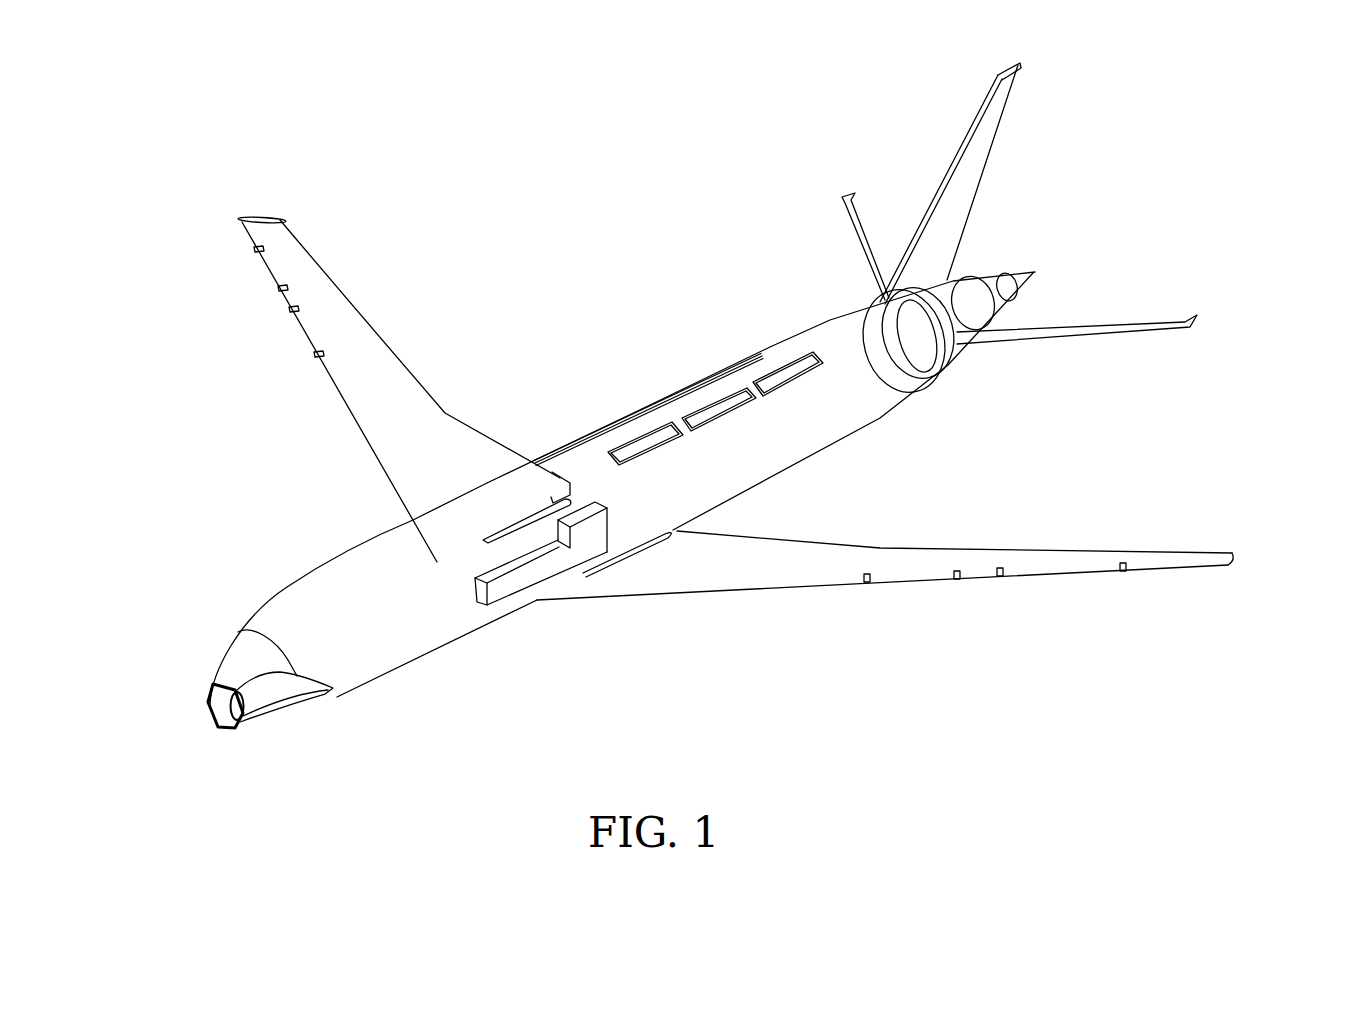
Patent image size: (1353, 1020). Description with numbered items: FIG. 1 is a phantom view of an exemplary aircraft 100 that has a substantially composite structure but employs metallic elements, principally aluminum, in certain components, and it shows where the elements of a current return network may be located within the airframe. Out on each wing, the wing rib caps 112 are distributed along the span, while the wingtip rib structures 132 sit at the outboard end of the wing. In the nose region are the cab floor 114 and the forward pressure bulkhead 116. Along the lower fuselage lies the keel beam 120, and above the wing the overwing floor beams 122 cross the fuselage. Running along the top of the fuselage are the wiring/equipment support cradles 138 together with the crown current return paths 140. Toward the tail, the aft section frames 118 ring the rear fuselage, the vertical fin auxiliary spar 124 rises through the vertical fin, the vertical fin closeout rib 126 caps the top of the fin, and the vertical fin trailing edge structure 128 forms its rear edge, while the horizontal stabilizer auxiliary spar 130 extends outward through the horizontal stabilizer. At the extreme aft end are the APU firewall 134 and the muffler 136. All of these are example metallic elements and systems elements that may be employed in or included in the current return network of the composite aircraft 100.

The aircraft 100 is at (284, 495).
The wing rib caps 112 is at (297, 313).
The cab floor 114 is at (310, 714).
The forward pressure bulkhead 116 is at (223, 727).
The aft section frames 118 is at (862, 333).
The keel beam 120 is at (577, 542).
The overwing floor beams 122 is at (552, 502).
The vertical fin auxiliary spar 124 is at (922, 213).
The vertical fin closeout rib 126 is at (1013, 67).
The vertical fin trailing edge structure 128 is at (1000, 125).
The horizontal stabilizer auxiliary spar 130 is at (1197, 316).
The wingtip rib structures 132 is at (1234, 561).
The APU firewall 134 is at (965, 283).
The muffler 136 is at (1020, 273).
The wiring/equipment support cradles 138 is at (675, 392).
The crown current return paths 140 is at (625, 447).